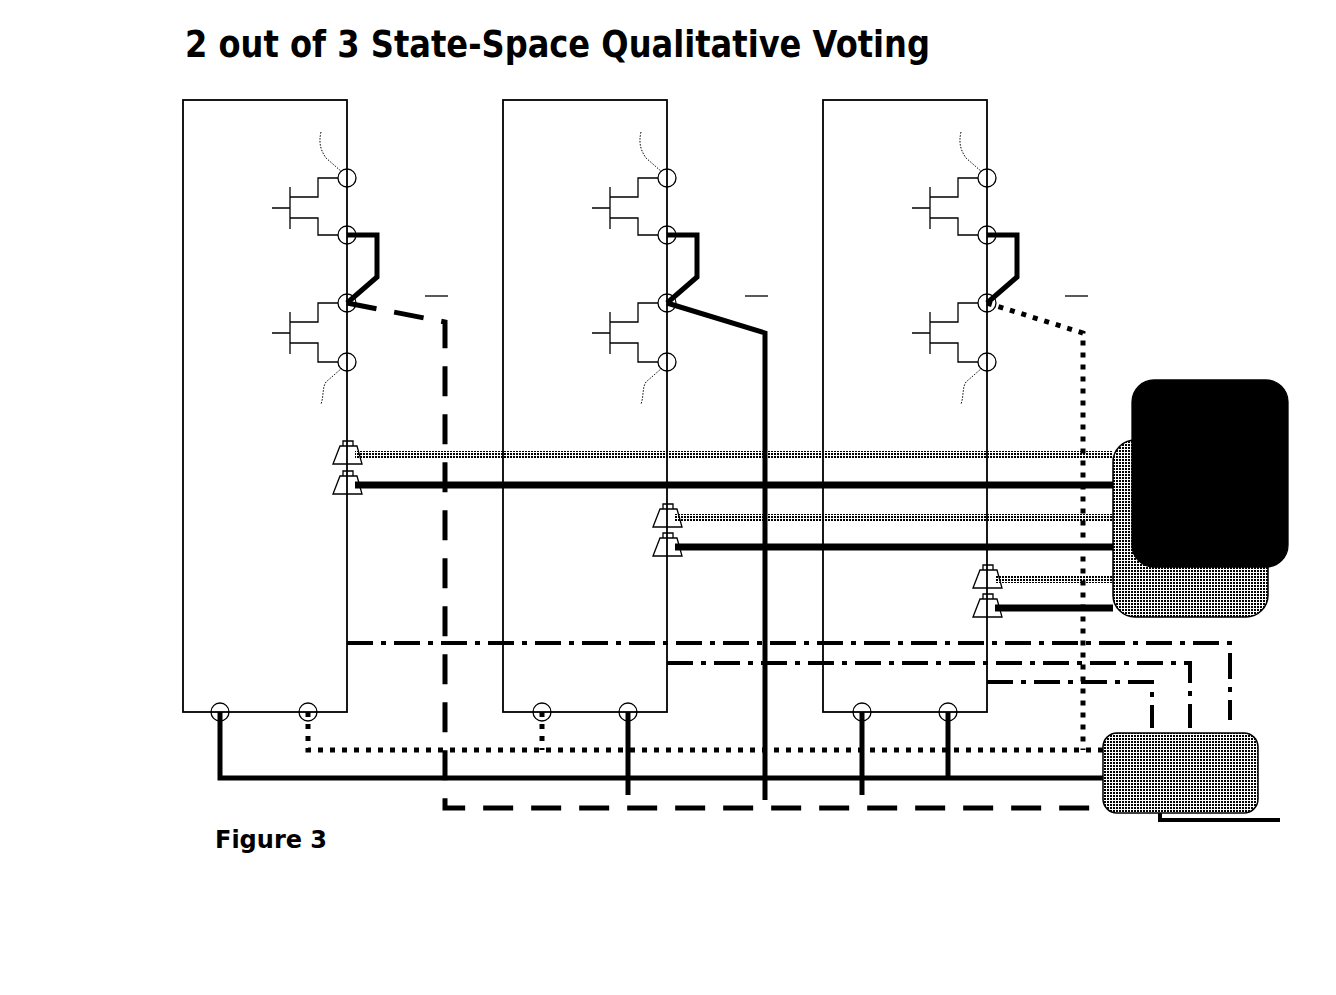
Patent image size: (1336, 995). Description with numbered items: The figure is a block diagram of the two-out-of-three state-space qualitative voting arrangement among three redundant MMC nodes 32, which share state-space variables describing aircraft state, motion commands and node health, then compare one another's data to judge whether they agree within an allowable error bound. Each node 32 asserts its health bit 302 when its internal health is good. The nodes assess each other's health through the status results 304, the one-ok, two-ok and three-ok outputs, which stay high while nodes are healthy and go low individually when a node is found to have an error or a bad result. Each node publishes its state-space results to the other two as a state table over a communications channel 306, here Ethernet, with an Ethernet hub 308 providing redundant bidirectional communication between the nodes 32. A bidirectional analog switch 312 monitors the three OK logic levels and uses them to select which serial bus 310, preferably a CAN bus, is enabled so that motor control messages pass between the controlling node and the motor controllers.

The node 32 is at (343, 100).
The bit 4 302 is at (372, 232).
The status results 304 is at (455, 748).
The communications channel 306 is at (368, 458).
The Ethernet hub 308 is at (1195, 380).
The serial bus 310 is at (360, 641).
The bidirectional analog switch 312 is at (1230, 733).